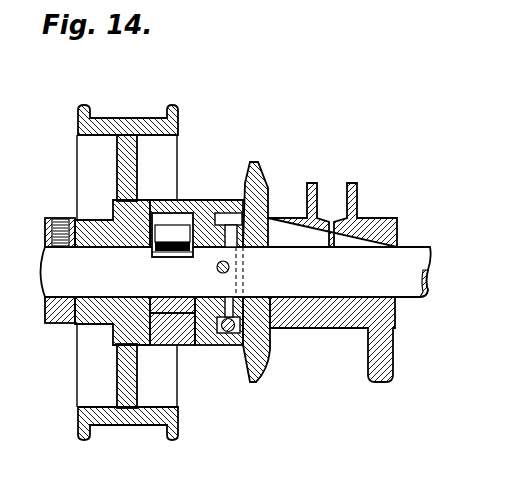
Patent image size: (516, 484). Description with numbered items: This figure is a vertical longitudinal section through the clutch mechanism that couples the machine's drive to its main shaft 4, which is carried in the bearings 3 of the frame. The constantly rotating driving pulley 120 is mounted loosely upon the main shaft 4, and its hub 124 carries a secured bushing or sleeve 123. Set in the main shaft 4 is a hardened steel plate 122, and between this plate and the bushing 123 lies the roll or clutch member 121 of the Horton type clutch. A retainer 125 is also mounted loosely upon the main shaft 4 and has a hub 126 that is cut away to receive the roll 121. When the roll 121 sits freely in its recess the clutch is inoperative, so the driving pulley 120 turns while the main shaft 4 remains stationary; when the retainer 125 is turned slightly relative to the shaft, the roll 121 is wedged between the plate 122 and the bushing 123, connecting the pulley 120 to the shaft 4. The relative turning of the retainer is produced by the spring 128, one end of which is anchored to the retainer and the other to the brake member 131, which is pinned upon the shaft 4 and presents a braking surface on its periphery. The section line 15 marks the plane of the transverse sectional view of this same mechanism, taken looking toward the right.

The bearings 3 is at (372, 226).
The main shaft 4 is at (403, 251).
The section line 15 is at (153, 200).
The driving pulley 120 is at (130, 122).
The roll or clutch member 121 is at (168, 228).
The hardened steel plate 122 is at (161, 254).
The bushing or sleeve 123 is at (185, 216).
The hub 124 is at (173, 338).
The retainer 125 is at (225, 261).
The hub 126 is at (163, 304).
The spring 128 is at (228, 346).
The brake member 131 is at (260, 186).